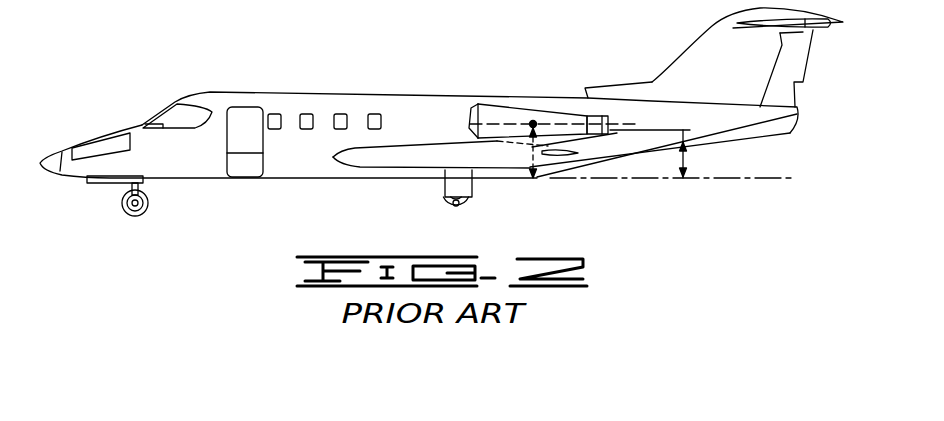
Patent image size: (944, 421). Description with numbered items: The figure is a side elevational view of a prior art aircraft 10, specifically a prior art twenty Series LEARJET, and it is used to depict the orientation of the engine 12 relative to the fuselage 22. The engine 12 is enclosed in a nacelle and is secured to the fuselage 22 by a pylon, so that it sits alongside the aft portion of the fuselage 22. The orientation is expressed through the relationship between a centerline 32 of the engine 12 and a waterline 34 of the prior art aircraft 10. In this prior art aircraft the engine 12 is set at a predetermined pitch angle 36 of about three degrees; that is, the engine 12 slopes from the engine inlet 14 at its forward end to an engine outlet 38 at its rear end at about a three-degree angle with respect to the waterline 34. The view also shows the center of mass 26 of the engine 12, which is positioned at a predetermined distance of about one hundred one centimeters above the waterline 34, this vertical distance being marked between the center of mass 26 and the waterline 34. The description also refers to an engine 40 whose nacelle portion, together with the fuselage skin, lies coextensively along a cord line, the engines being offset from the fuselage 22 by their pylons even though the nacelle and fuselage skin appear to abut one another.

The prior art aircraft 10 is at (220, 52).
The engine 12 is at (522, 100).
The engine inlet 14 is at (462, 117).
The fuselage 22 is at (333, 94).
The center of mass 26 is at (528, 126).
The centerline 32 is at (648, 128).
The waterline 34 is at (627, 180).
The pitch angle 36 is at (690, 152).
The engine outlet 38 is at (618, 119).
The engine 40 is at (532, 150).